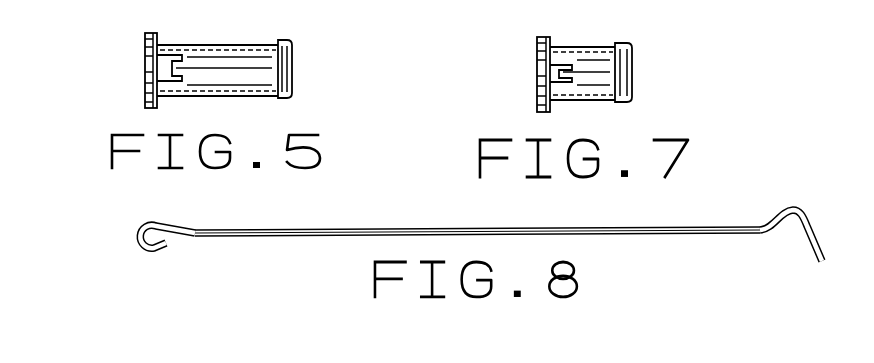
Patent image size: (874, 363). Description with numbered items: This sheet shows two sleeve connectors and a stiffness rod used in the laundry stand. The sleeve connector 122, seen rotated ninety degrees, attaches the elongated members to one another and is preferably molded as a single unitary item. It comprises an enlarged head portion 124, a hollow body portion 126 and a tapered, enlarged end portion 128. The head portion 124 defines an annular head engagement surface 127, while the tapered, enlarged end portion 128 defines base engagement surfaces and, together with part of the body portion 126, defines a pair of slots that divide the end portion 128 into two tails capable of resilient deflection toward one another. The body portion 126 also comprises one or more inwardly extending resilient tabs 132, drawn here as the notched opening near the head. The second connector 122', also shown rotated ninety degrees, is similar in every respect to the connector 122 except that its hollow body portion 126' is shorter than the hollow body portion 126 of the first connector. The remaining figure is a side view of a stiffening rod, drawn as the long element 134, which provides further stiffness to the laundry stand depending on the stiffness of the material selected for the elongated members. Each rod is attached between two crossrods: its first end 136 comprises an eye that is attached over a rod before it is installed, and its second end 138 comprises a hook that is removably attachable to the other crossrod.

In FIG. 5, the sleeve connector 122 is at (215, 63).
In FIG. 7, the connector 122' is at (596, 66).
In FIG. 5, the enlarged head portion 124 is at (146, 70).
In FIG. 7, the enlarged head portion 124 is at (538, 78).
In FIG. 5, the hollow body portion 126 is at (248, 83).
In FIG. 7, the hollow body portion 126' is at (606, 89).
In FIG. 5, the annular head engagement surface 127 is at (158, 34).
In FIG. 7, the annular head engagement surface 127 is at (552, 42).
In FIG. 5, the tapered, enlarged end portion 128 is at (291, 40).
In FIG. 7, the tapered, enlarged end portion 128 is at (628, 45).
In FIG. 5, the inwardly extending resilient tab 132 is at (175, 54).
In FIG. 7, the inwardly extending resilient tab 132 is at (568, 64).
In FIG. 8, the rod 134 is at (733, 227).
In FIG. 8, the first end 136 is at (132, 230).
In FIG. 8, the second end 138 is at (818, 232).